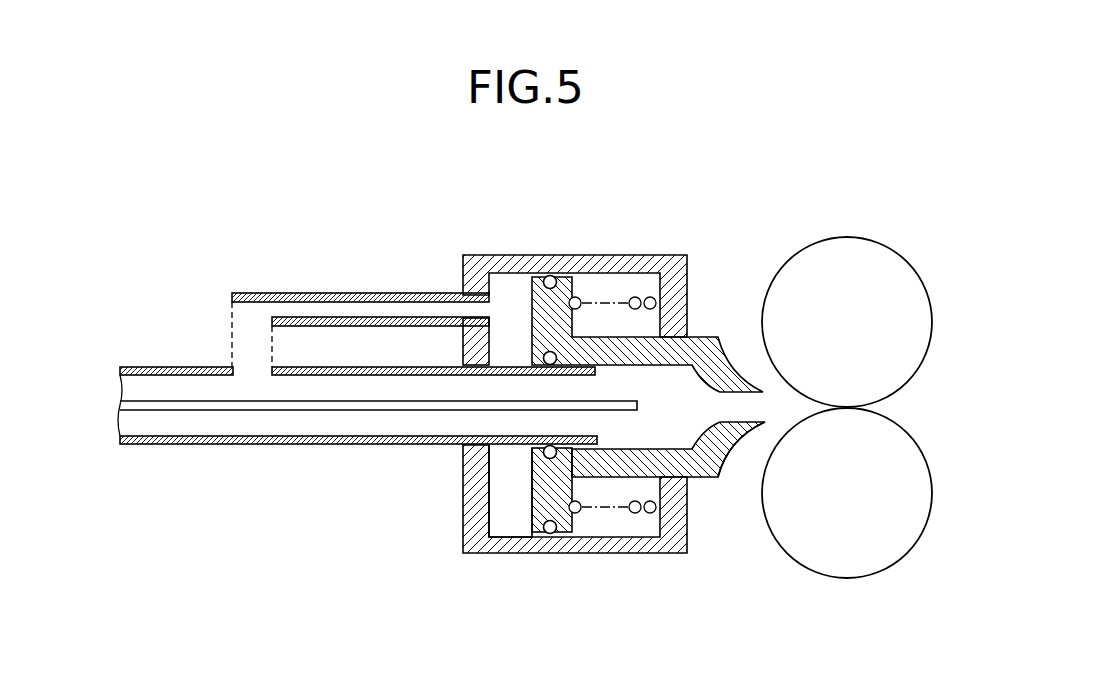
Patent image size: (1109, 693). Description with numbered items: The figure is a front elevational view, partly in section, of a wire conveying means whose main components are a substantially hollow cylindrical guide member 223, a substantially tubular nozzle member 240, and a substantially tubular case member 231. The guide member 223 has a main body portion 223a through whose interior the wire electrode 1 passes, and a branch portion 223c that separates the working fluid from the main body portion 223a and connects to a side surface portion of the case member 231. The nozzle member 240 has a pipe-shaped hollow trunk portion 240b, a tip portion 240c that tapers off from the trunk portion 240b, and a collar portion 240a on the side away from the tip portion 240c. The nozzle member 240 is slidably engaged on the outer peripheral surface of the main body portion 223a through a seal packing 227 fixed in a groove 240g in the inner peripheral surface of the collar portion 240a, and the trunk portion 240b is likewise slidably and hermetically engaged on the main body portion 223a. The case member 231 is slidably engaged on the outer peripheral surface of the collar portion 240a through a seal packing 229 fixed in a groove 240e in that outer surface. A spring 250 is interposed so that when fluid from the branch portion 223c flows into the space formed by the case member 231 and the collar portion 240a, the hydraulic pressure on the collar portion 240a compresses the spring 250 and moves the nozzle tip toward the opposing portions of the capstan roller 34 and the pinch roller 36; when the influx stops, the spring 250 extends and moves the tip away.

The wire electrode 1 is at (208, 411).
The guide member 223 is at (172, 366).
The main body portion 223a is at (300, 445).
The branch portion 223c is at (352, 292).
The seal packing 227 is at (532, 355).
The seal packing 229 is at (548, 277).
The case member 231 is at (628, 255).
The nozzle member 240 is at (532, 488).
The collar portion 240a is at (527, 512).
The trunk portion 240b is at (700, 478).
The tip portion 240c is at (727, 478).
The groove 240e is at (563, 535).
The groove 240g is at (577, 357).
The spring 250 is at (635, 513).
The capstan roller 34 is at (847, 237).
The pinch roller 36 is at (845, 578).